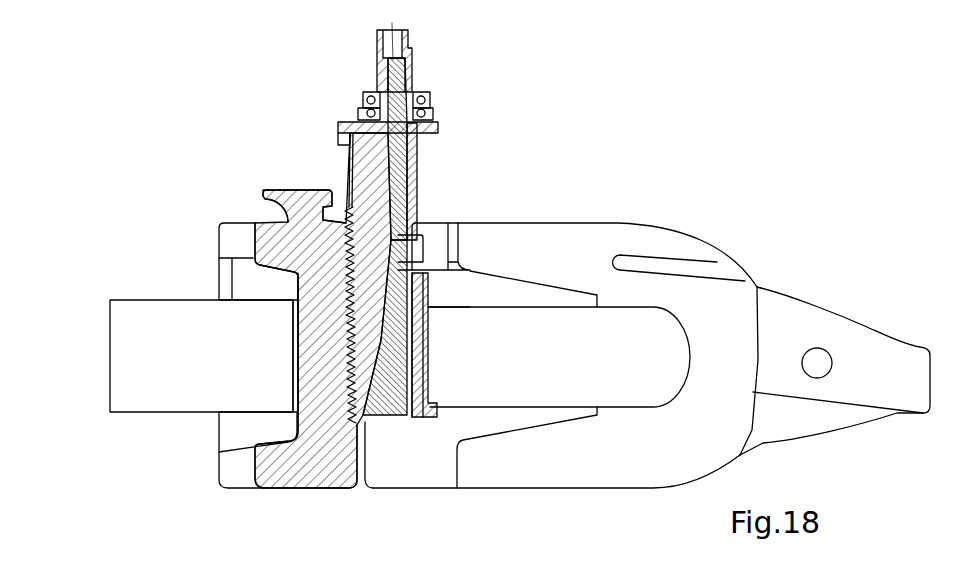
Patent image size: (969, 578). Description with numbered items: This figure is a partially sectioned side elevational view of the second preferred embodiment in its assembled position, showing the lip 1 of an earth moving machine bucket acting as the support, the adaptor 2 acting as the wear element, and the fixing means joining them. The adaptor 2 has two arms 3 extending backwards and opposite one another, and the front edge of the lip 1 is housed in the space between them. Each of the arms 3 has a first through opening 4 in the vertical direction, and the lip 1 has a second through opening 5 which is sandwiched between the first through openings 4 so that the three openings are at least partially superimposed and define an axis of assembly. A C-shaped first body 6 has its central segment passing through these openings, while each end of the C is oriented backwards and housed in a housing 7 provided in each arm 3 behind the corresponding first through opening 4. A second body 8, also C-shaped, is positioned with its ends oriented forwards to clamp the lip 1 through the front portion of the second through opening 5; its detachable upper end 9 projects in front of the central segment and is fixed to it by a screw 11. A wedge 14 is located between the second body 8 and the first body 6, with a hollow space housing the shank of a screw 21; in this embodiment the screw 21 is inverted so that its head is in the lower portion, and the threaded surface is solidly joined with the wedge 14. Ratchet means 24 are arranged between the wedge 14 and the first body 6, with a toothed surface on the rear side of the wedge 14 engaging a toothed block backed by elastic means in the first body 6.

The lip 1 is at (508, 397).
The adaptor 2 is at (588, 260).
The arms 3 is at (233, 240).
The first through opening 4 is at (373, 478).
The second through opening 5 is at (298, 357).
The first body 6 is at (292, 220).
The housing 7 is at (240, 249).
The second body 8 is at (402, 395).
The upper end 9 is at (437, 307).
The screw 11 is at (440, 270).
The wedge 14 is at (365, 152).
The screw 21 is at (400, 157).
The ratchet means 24 is at (338, 340).